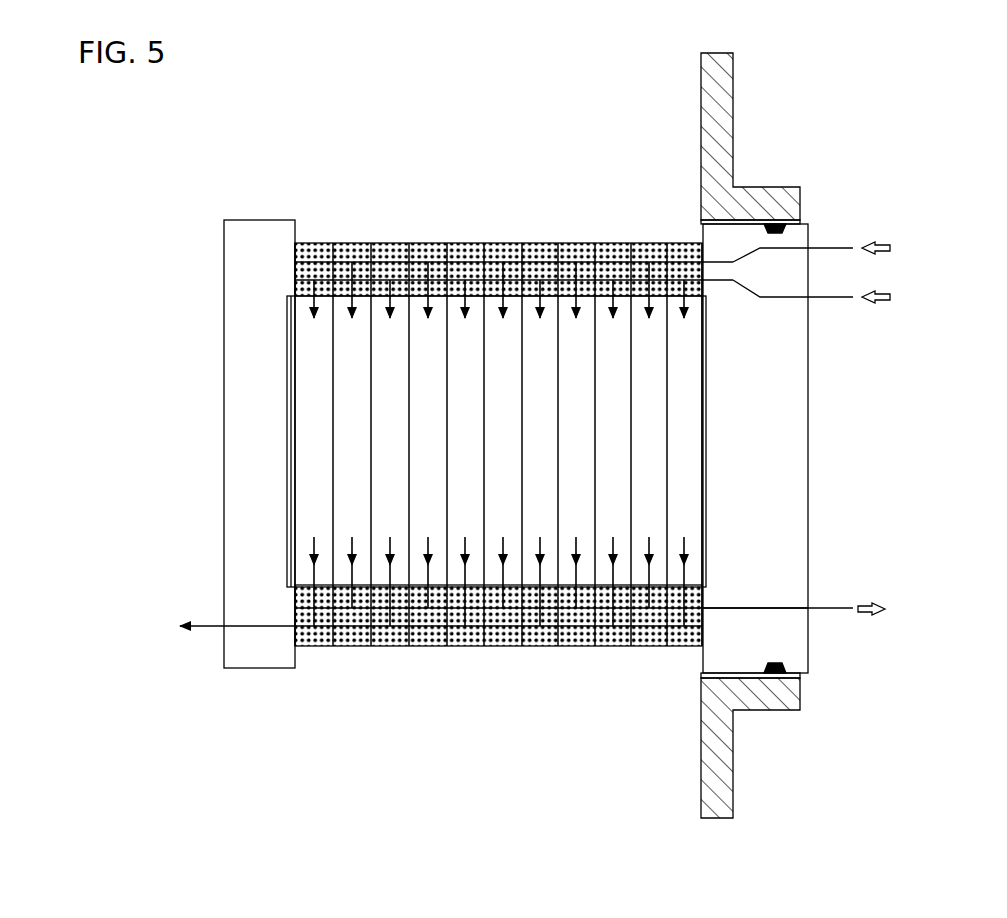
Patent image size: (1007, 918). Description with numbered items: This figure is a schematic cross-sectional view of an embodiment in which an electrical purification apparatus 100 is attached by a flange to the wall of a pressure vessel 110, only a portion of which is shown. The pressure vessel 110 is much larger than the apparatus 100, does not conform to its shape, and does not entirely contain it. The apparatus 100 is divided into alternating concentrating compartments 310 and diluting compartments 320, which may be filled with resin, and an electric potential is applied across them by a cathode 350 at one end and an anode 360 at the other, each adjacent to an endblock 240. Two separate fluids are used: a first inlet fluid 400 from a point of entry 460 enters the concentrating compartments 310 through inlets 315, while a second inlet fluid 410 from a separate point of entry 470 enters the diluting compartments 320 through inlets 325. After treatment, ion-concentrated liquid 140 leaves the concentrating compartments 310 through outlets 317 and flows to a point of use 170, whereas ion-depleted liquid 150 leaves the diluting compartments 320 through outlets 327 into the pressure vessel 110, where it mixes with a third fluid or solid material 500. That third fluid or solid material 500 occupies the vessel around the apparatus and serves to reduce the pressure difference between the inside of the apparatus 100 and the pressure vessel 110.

The electrical purification apparatus 100 is at (100, 267).
The pressure vessel 110 is at (739, 122).
The ion-concentrated liquid 140 is at (765, 607).
The ion-depleted liquid 150 is at (262, 632).
The point of use 170 is at (873, 604).
The endblock 240 is at (818, 499).
The concentrating compartments 310 is at (299, 441).
The diluting compartments 320 is at (337, 441).
The inlets 315 is at (314, 290).
The inlets 325 is at (352, 280).
The outlets 317 is at (316, 585).
The outlets 327 is at (352, 585).
The cathode 350 is at (284, 391).
The anode 360 is at (710, 516).
The inlet fluid 400 is at (758, 299).
The inlet fluid 410 is at (787, 242).
The point of entry 460 is at (880, 244).
The point of entry 470 is at (880, 301).
The third fluid or solid material 500 is at (518, 169).